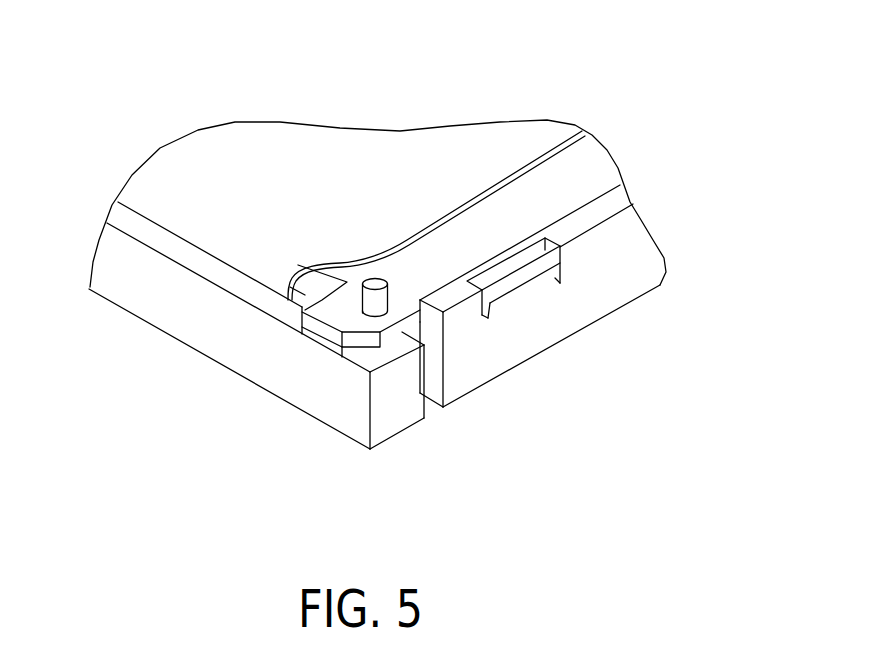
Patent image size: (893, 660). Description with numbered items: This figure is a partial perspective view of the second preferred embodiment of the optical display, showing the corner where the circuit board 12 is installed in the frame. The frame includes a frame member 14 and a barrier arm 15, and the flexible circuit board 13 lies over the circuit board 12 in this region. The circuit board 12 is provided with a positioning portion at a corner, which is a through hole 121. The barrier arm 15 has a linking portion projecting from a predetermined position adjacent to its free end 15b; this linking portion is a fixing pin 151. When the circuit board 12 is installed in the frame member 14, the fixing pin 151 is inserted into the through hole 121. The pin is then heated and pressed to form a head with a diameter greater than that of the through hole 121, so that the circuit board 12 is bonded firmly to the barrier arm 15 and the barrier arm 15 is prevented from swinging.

The circuit board 12 is at (590, 172).
The flexible circuit board 13 is at (346, 160).
The frame member 14 is at (611, 306).
The barrier arm 15 is at (156, 327).
The free end 15b is at (432, 410).
The through hole 121 is at (368, 304).
The fixing pin 151 is at (366, 300).